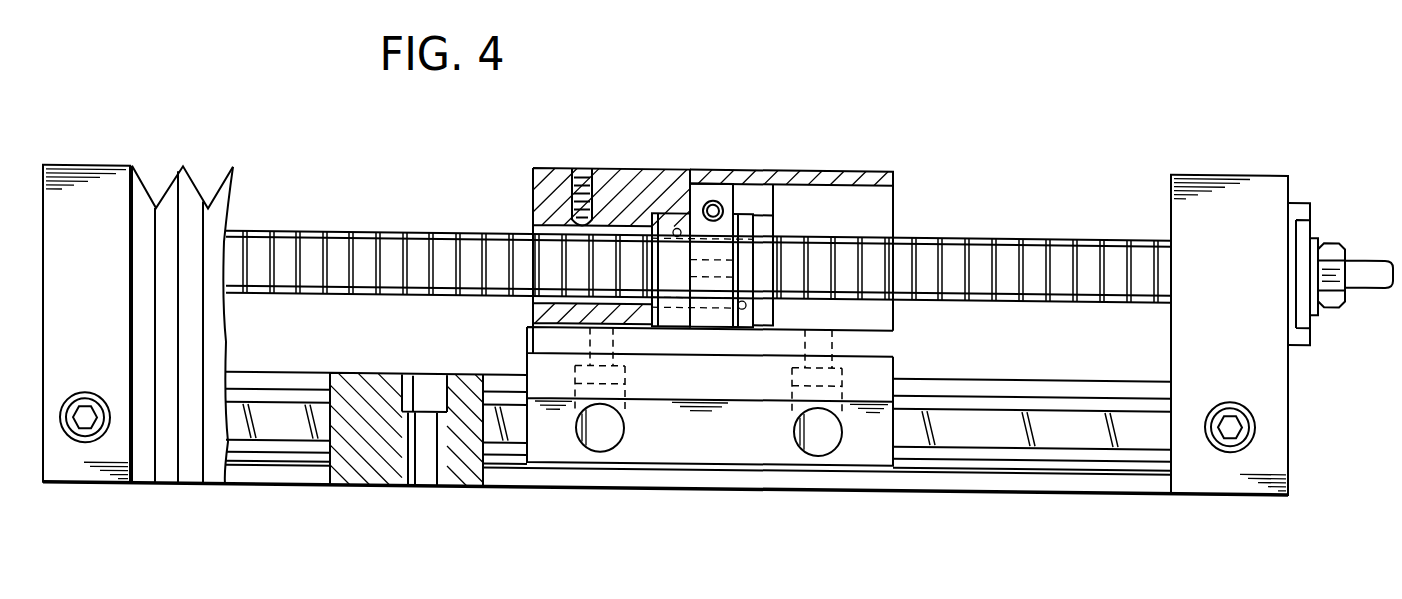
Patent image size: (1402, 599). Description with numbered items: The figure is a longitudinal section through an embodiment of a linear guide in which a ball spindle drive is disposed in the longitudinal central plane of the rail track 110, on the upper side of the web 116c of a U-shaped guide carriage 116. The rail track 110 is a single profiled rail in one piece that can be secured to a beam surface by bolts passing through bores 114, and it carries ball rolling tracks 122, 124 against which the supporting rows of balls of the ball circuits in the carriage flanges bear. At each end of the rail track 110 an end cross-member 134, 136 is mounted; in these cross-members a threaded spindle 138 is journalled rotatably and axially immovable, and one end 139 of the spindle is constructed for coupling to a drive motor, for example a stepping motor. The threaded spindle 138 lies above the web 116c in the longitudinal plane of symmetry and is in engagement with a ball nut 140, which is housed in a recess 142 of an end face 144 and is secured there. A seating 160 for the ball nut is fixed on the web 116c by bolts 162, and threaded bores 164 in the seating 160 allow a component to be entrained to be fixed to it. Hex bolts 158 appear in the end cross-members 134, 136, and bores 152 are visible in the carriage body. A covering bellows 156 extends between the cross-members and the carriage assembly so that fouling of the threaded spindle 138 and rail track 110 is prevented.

The rail track 110 is at (1078, 432).
The bore 114 is at (425, 466).
The guide carriage 116 is at (718, 428).
The web 116c is at (895, 331).
The ball rolling track 122 is at (968, 398).
The ball rolling track 124 is at (1018, 447).
The end cross-member 134 is at (105, 182).
The end cross-member 136 is at (1228, 183).
The threaded spindle 138 is at (1058, 237).
The spindle end 139 is at (1373, 258).
The ball nut 140 is at (710, 240).
The recess 142 is at (895, 196).
The end face 144 is at (895, 164).
The bore holes 152 is at (603, 434).
The covering bellows 156 is at (203, 196).
The hex socket bolt 158 is at (85, 420).
The seating 160 is at (532, 173).
The bolts 162 is at (626, 367).
The threaded bores 164 is at (586, 162).